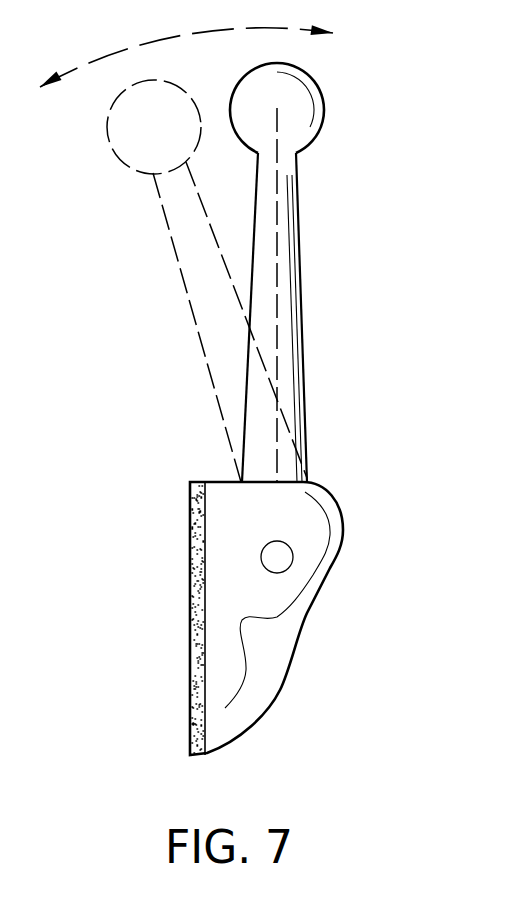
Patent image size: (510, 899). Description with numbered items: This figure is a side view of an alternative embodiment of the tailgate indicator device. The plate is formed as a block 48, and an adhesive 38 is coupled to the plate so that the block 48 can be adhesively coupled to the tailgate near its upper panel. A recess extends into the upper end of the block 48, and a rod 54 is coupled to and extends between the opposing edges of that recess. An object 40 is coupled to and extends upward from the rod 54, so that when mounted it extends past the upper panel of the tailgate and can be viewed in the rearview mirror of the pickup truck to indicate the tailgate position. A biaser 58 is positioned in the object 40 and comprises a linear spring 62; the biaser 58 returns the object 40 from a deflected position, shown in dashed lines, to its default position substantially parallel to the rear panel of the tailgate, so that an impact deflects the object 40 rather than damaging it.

The object 40 is at (298, 243).
The biaser 58 is at (277, 290).
The linear spring 62 is at (277, 348).
The adhesive 38 is at (203, 594).
The block 48 is at (235, 663).
The rod 54 is at (277, 556).